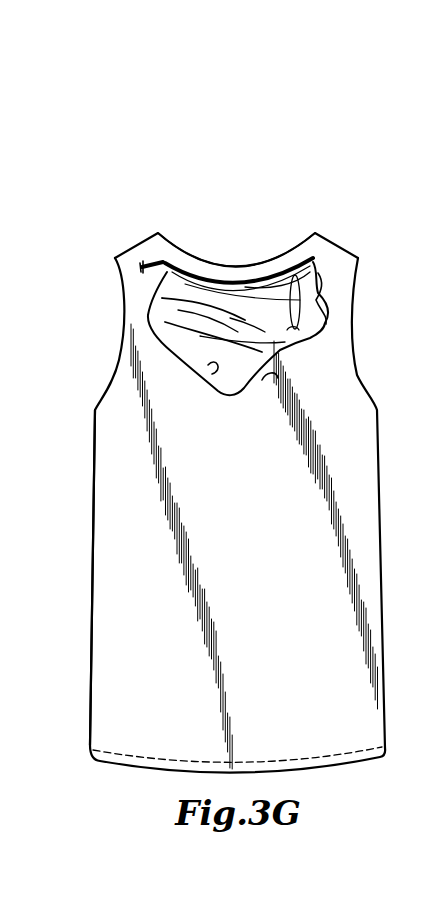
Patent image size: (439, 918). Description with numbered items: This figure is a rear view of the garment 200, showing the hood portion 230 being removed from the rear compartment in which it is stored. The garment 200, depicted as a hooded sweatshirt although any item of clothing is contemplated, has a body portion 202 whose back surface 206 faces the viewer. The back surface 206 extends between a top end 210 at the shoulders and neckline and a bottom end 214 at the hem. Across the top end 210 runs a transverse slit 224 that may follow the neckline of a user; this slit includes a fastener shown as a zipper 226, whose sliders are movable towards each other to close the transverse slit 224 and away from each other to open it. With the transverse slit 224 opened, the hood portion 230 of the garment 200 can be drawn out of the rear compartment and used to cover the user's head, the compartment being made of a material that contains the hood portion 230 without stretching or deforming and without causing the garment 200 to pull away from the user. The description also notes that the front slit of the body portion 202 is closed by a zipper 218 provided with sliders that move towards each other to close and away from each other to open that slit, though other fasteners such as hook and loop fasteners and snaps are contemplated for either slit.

The garment 200 is at (170, 157).
The body portion 202 is at (82, 449).
The back surface 206 is at (105, 535).
The top end 210 is at (210, 268).
The bottom end 214 is at (150, 752).
The zipper 218 is at (262, 288).
The transverse slit 224 is at (232, 282).
The zipper 226 is at (160, 261).
The hood portion 230 is at (325, 322).